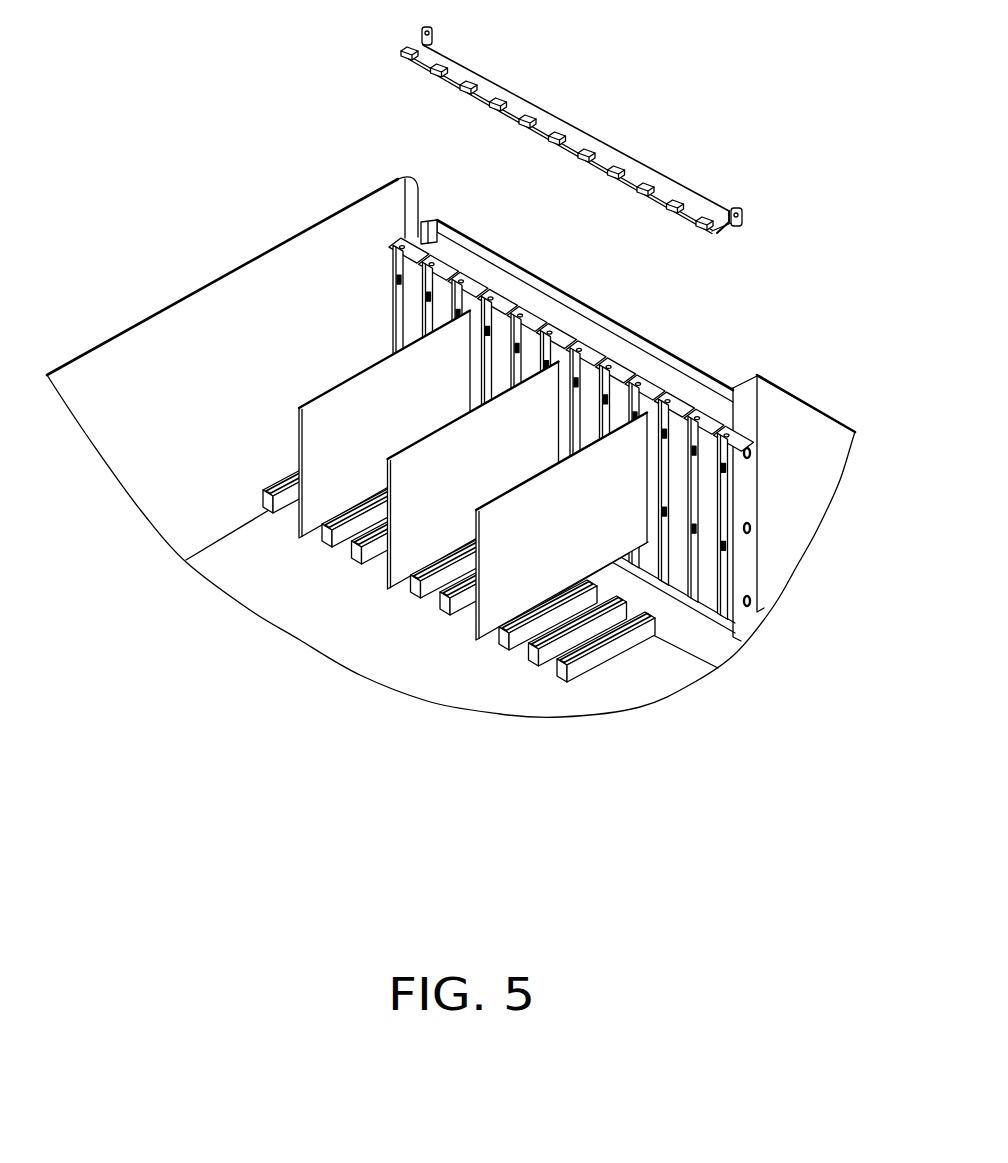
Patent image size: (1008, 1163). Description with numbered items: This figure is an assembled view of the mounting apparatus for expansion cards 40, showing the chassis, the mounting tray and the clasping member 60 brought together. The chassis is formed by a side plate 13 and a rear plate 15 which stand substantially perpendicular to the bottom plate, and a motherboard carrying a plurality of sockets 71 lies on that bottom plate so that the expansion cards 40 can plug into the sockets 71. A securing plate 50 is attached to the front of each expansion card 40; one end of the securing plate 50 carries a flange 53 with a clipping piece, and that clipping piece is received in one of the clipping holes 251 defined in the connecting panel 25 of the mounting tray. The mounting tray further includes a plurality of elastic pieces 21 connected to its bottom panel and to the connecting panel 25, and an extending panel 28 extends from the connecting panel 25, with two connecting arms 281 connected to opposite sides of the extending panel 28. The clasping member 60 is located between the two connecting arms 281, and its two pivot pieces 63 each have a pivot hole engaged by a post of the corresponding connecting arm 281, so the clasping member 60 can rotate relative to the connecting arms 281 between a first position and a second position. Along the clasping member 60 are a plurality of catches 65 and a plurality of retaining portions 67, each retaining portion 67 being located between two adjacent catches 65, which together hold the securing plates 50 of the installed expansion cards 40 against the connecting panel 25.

The side plate 13 is at (217, 318).
The rear plate 15 is at (780, 425).
The elastic pieces 21 is at (722, 538).
The connecting panel 25 is at (708, 397).
The extending panel 28 is at (520, 272).
The expansion cards 40 is at (492, 610).
The securing plate 50 is at (650, 563).
The flange 53 is at (655, 378).
The clasping member 60 is at (541, 117).
The pivot pieces 63 is at (430, 30).
The catches 65 is at (461, 88).
The retaining portions 67 is at (421, 67).
The sockets 71 is at (575, 657).
The clipping holes 251 is at (613, 352).
The connecting arms 281 is at (397, 238).